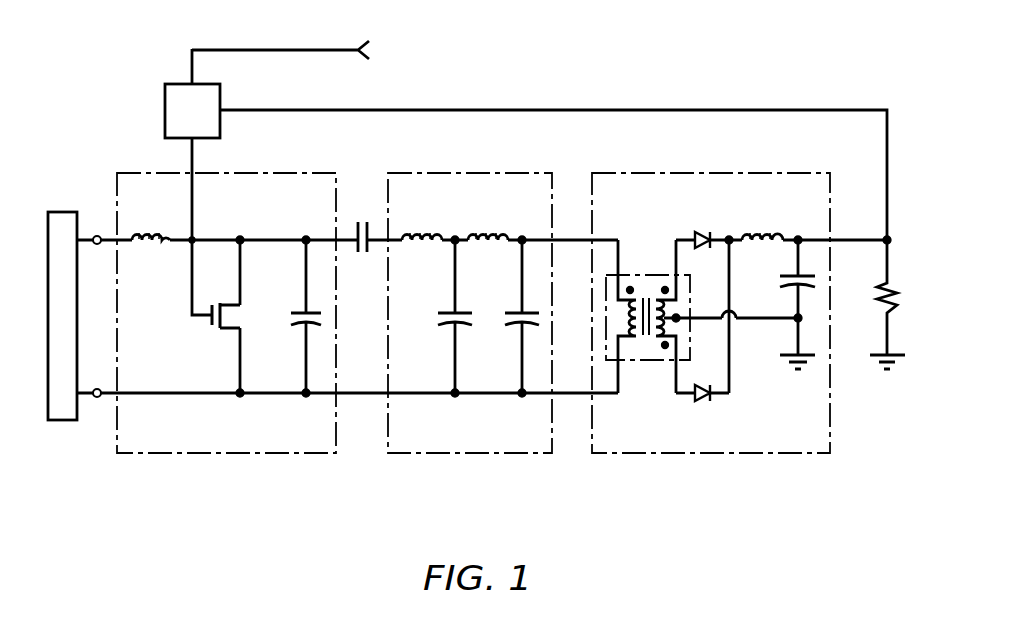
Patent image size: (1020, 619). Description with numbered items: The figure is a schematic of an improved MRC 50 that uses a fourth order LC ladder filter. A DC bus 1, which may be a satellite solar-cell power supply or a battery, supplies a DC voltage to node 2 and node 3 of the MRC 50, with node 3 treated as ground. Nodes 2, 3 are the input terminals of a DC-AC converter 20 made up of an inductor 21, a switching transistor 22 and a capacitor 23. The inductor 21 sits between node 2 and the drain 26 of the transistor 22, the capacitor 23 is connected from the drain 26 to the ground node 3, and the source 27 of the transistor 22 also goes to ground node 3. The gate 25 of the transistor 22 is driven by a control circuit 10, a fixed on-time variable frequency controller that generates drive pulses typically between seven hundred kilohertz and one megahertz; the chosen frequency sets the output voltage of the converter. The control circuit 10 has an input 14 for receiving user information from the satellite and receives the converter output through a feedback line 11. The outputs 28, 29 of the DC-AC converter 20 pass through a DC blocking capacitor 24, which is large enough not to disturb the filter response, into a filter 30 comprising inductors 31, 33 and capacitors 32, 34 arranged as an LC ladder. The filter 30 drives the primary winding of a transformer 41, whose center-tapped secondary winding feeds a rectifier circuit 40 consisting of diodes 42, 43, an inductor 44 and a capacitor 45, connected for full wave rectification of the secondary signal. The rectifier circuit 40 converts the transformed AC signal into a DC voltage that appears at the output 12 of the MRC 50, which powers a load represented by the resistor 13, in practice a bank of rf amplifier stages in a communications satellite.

The DC bus 1 is at (62, 210).
The node 2 is at (97, 245).
The node 3 is at (97, 389).
The control circuit 10 is at (165, 110).
The feedback line 11 is at (553, 108).
The output 12 is at (886, 237).
The resistor 13 is at (878, 301).
The input 14 is at (276, 48).
The DC-AC converter 20 is at (302, 173).
The inductor 21 is at (151, 226).
The switching transistor 22 is at (215, 300).
The capacitor 23 is at (292, 313).
The DC blocking capacitor 24 is at (361, 220).
The gate 25 is at (190, 283).
The drain 26 is at (241, 273).
The source 27 is at (240, 362).
The output 28 is at (306, 236).
The output 29 is at (306, 398).
The filter 30 is at (517, 173).
The inductor 31 is at (421, 225).
The capacitor 32 is at (440, 313).
The inductor 33 is at (487, 225).
The capacitor 34 is at (508, 313).
The rectifier circuit 40 is at (792, 173).
The transformer 41 is at (649, 274).
The diode 42 is at (704, 229).
The diode 43 is at (704, 403).
The inductor 44 is at (762, 226).
The capacitor 45 is at (782, 283).
The MRC 50 is at (489, 512).